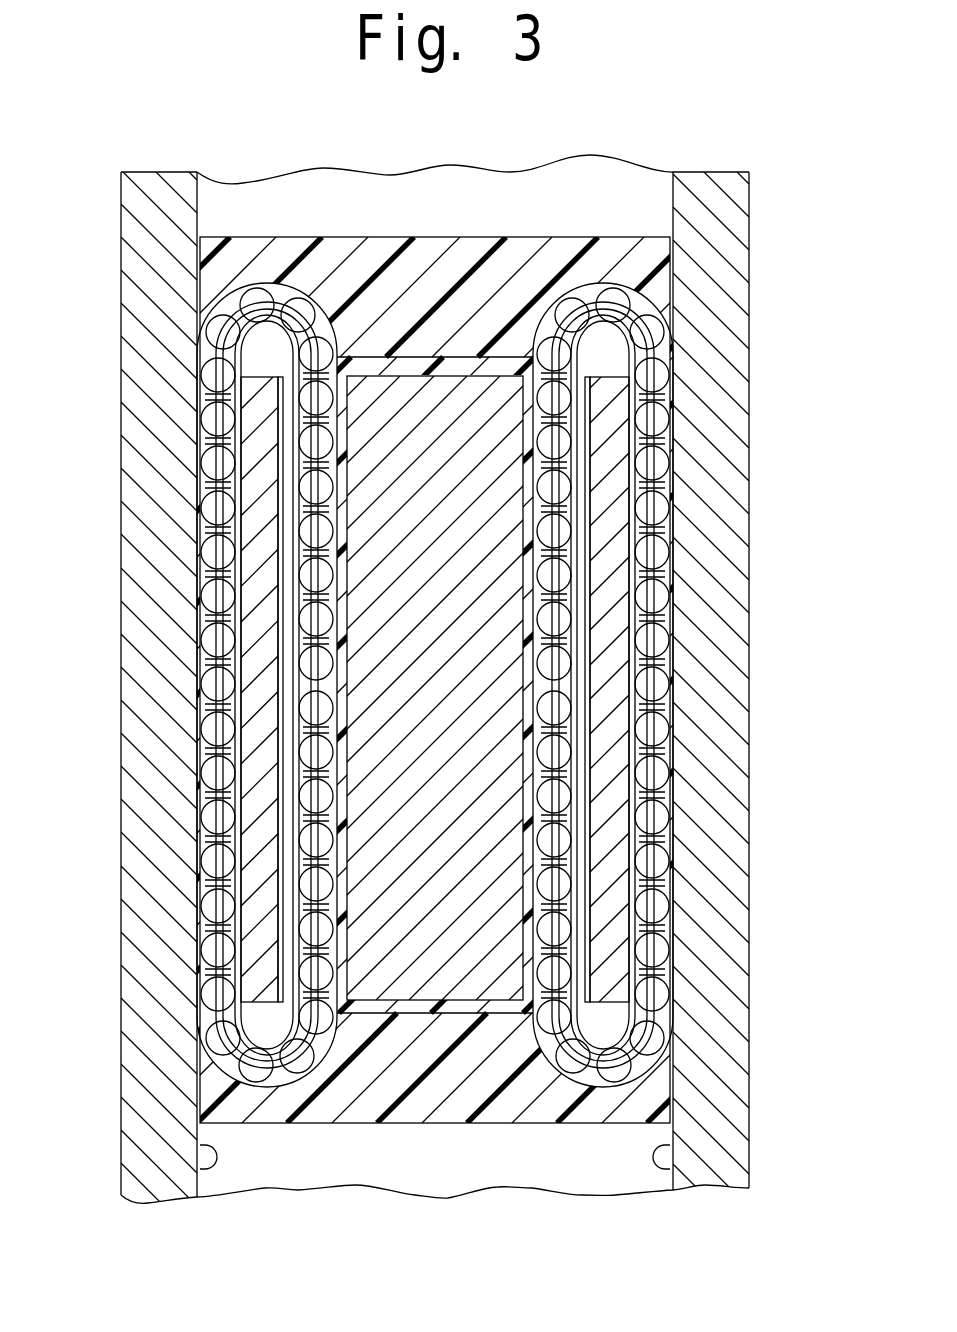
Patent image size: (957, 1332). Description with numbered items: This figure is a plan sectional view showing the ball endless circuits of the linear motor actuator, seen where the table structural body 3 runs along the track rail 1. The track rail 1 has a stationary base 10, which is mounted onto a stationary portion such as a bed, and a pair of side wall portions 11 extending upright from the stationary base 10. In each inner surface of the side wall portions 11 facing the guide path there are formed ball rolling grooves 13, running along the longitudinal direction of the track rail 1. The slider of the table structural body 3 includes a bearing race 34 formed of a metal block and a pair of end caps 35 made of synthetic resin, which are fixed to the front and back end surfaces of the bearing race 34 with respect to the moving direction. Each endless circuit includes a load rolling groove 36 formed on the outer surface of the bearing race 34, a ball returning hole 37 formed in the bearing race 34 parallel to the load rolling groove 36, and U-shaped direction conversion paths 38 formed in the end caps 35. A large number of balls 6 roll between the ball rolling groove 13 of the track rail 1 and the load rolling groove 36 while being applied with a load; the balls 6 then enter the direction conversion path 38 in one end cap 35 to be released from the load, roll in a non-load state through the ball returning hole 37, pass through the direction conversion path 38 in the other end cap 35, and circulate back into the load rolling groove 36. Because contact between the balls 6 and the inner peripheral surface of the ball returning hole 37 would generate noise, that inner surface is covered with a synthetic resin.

The track rail 1 is at (478, 688).
The table structural body 3 is at (478, 687).
The balls 6 is at (305, 745).
The stationary base 10 is at (565, 1175).
The side wall portions 11 is at (150, 976).
The ball rolling grooves 13 is at (212, 1155).
The bearing race 34 is at (258, 462).
The end caps 35 is at (432, 240).
The load rolling groove 36 is at (232, 570).
The ball returning hole 37 is at (305, 878).
The direction conversion paths 38 is at (248, 288).